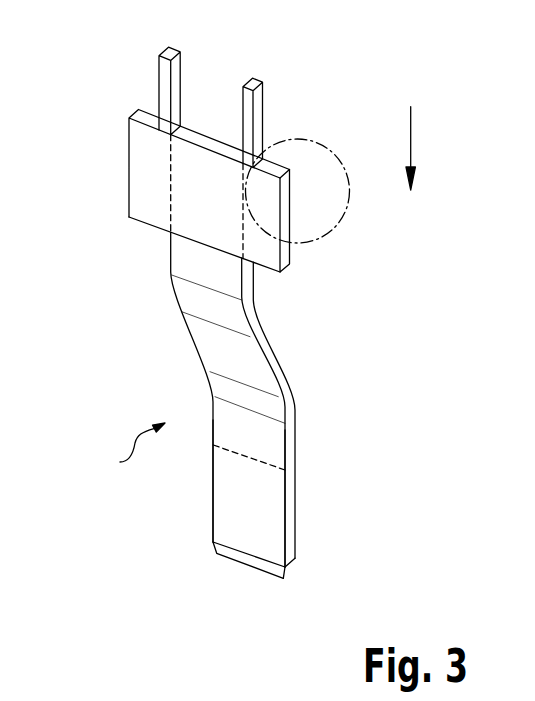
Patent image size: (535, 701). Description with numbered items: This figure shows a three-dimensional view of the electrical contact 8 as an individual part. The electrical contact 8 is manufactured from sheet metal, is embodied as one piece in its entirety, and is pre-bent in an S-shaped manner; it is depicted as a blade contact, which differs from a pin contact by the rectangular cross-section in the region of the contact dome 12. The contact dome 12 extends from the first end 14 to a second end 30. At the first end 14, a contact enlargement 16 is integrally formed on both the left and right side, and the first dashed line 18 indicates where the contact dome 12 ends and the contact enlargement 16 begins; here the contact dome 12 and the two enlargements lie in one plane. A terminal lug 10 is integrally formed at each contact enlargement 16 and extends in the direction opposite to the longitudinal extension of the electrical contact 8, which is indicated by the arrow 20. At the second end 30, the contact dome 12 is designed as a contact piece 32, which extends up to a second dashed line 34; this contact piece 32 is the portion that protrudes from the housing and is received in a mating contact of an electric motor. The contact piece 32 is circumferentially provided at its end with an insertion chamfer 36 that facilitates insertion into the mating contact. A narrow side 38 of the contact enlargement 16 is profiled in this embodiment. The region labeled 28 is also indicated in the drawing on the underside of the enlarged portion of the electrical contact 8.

The electrical contact 8 is at (133, 453).
The terminal lug 10 is at (257, 105).
The contact dome 12 is at (230, 335).
The first end 14 is at (193, 137).
The contact enlargement 16 is at (282, 272).
The first dashed line 18 is at (170, 170).
The arrow 20 is at (411, 135).
The underside of base body 28 is at (147, 223).
The second end 30 is at (247, 567).
The contact piece 32 is at (268, 505).
The second dashed line 34 is at (285, 470).
The insertion chamfer 36 is at (268, 568).
The narrow side 38 is at (287, 200).